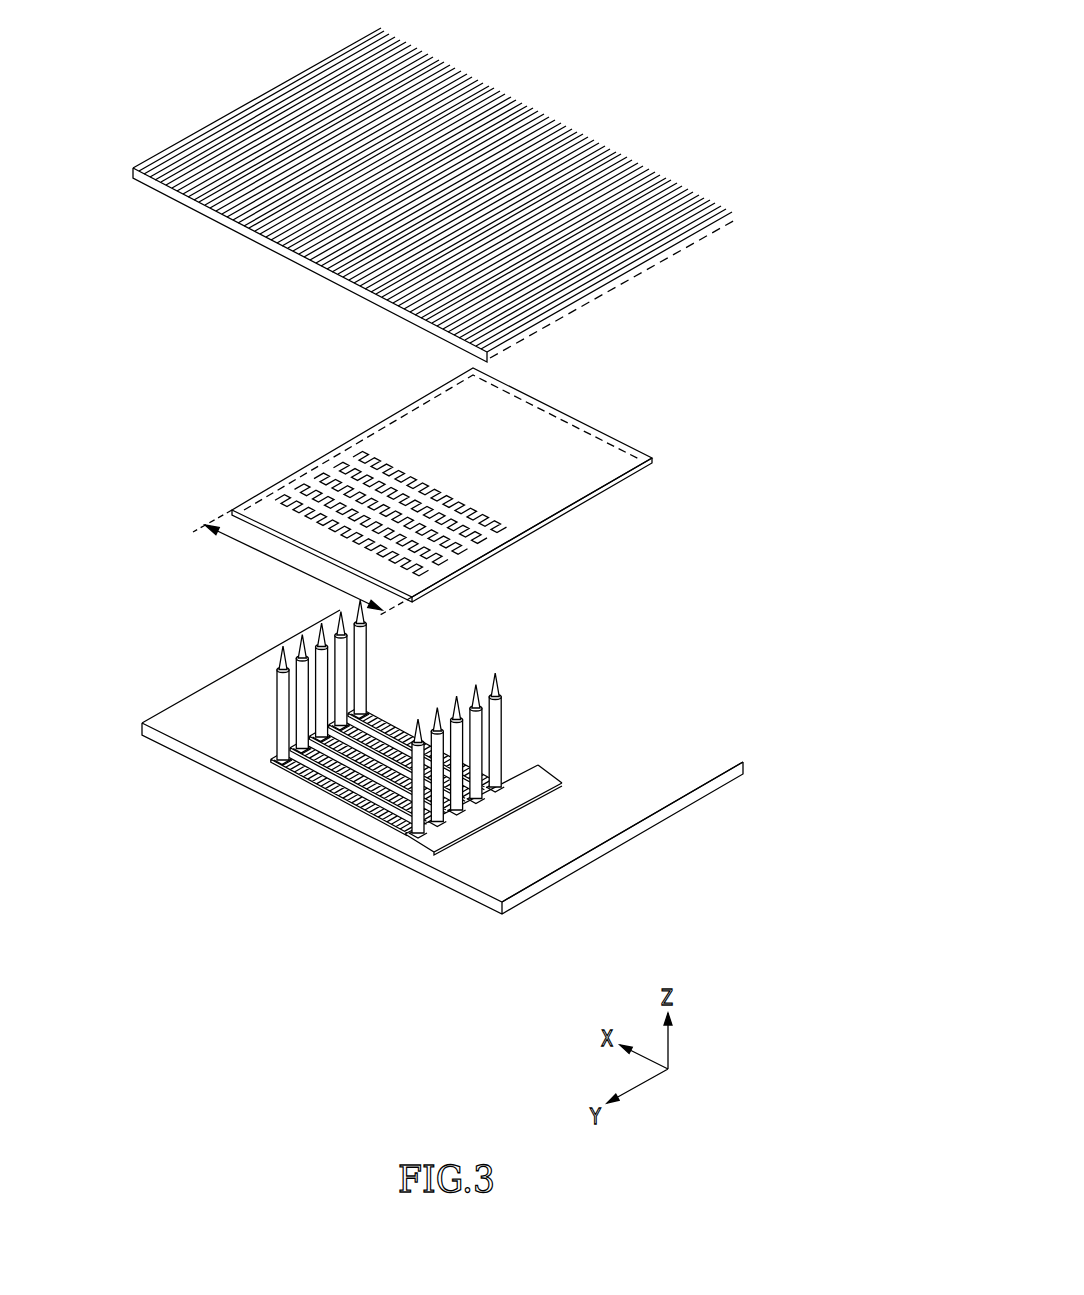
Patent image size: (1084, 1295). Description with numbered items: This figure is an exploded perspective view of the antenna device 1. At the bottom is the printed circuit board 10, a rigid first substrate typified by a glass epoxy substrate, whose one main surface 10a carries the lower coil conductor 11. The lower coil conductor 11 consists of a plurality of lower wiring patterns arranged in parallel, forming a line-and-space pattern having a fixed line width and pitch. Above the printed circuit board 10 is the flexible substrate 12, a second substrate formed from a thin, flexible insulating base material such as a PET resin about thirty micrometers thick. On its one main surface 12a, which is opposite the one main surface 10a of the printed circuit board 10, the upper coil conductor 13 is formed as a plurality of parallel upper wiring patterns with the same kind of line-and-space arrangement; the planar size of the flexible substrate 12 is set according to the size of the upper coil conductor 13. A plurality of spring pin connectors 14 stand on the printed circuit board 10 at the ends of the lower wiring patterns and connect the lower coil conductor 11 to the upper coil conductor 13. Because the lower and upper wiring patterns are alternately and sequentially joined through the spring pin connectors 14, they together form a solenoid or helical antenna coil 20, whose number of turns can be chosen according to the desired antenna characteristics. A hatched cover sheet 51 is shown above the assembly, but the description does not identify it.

The antenna device 1 is at (631, 46).
The cover member (hatched upper plate) 51 is at (320, 90).
The flexible substrate 12 is at (575, 507).
The one main surface of the flexible substrate 12a is at (528, 528).
The upper coil conductor 13 is at (455, 485).
The printed circuit board 10 is at (665, 808).
The one main surface of the printed circuit board 10a is at (558, 851).
The lower coil conductor 11 is at (353, 797).
The antenna coil 20 is at (278, 784).
The spring pin connectors 14 is at (275, 705).